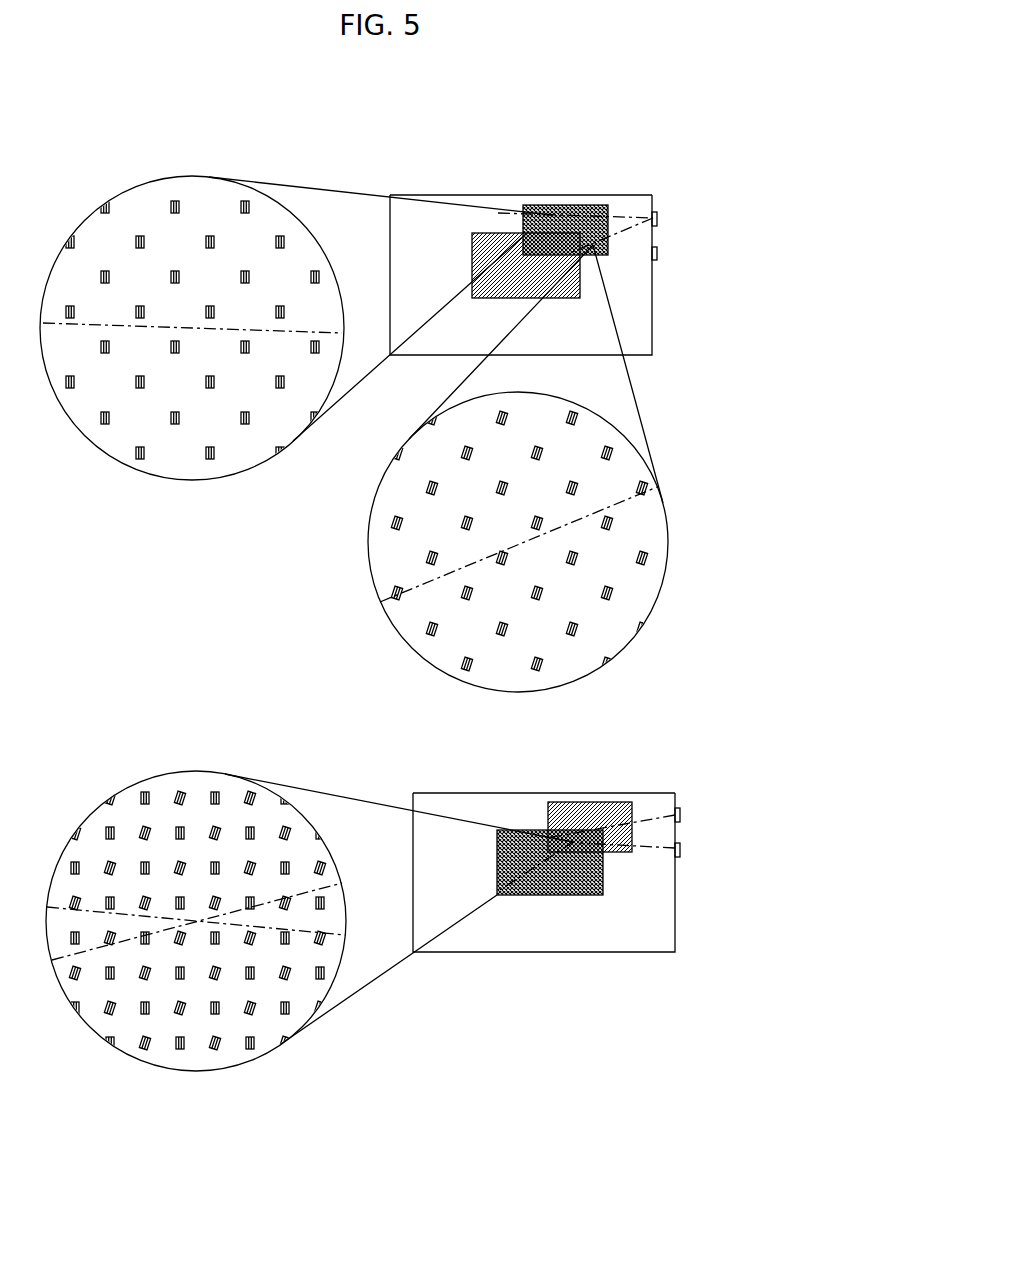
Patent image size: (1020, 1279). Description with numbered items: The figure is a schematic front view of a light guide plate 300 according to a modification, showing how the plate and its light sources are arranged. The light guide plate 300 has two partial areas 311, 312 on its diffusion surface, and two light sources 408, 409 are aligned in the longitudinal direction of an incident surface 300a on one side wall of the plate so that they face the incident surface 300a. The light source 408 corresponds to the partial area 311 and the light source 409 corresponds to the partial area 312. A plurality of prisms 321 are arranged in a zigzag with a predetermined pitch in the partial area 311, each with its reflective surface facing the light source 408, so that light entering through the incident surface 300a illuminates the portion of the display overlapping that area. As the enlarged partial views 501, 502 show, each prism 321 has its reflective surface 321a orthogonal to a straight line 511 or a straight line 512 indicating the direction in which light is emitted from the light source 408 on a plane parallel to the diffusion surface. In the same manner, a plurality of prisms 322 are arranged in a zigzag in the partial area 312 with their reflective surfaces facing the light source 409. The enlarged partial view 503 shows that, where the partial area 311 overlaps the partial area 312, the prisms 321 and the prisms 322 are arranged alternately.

The light guide plate 300 is at (664, 355).
The incident surface 300a is at (652, 196).
The partial area 311 is at (563, 205).
The partial area 312 is at (483, 298).
The prism 321 is at (315, 272).
The reflective surface 321a is at (320, 345).
The prism 322 is at (210, 1012).
The light source 408 is at (657, 219).
The light source 409 is at (657, 253).
The enlarged partial view 501 is at (238, 482).
The enlarged partial view 502 is at (629, 646).
The enlarged partial view 503 is at (118, 1053).
The straight line 511 is at (326, 327).
The straight line 512 is at (625, 497).